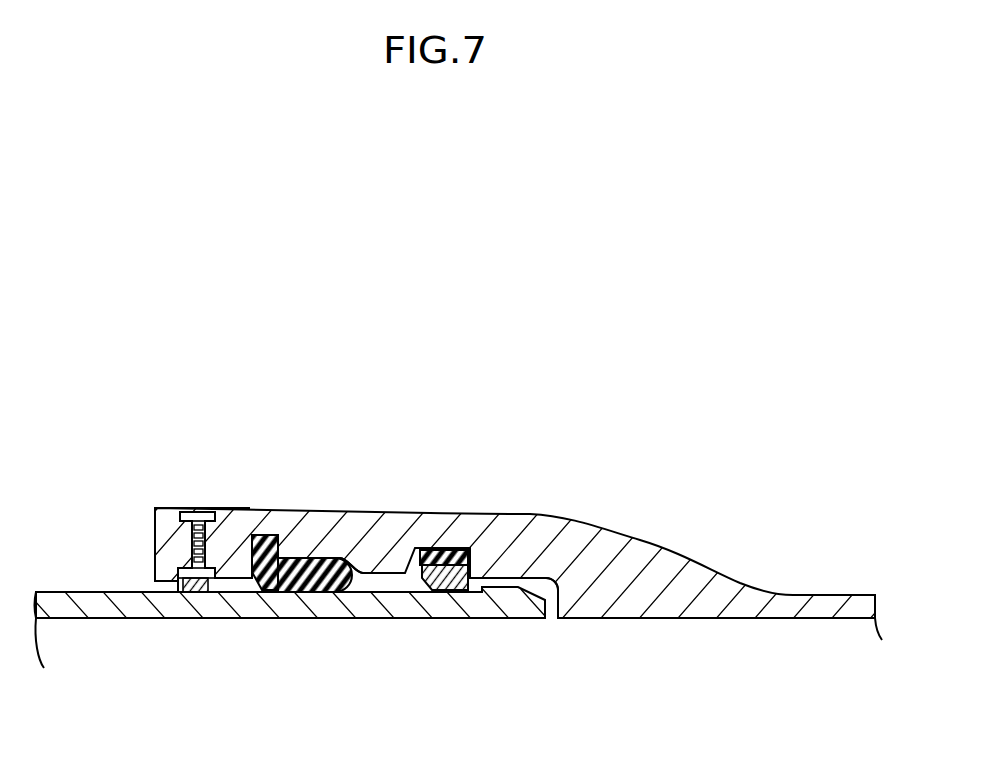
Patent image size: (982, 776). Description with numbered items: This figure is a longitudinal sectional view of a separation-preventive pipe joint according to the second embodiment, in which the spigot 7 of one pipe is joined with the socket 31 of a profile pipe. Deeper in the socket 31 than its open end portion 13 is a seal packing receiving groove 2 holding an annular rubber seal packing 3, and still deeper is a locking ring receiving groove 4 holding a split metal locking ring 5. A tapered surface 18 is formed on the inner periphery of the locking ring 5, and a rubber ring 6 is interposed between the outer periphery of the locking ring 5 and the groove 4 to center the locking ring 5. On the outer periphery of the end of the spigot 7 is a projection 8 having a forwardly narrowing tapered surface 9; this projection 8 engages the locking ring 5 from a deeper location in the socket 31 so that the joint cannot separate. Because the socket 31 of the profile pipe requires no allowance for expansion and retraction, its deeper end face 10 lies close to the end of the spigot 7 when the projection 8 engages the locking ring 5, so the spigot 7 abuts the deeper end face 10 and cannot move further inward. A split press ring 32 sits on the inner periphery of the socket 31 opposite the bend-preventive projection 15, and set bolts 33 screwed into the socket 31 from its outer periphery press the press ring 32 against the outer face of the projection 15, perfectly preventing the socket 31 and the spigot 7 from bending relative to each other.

The socket 31 is at (367, 520).
The spigot 7 is at (496, 600).
The set bolts 33 is at (172, 508).
The press ring 32 is at (203, 594).
The bend-preventive projection 15 is at (233, 566).
The open end portion 13 is at (153, 579).
The seal packing receiving groove 2 is at (264, 594).
The seal packing 3 is at (328, 594).
The tapered surface 18 is at (414, 578).
The locking ring 5 is at (466, 582).
The locking ring receiving groove 4 is at (450, 592).
The rubber ring 6 is at (463, 550).
The projection 8 is at (498, 588).
The tapered surface 9 is at (546, 577).
The deeper end face 10 is at (553, 596).